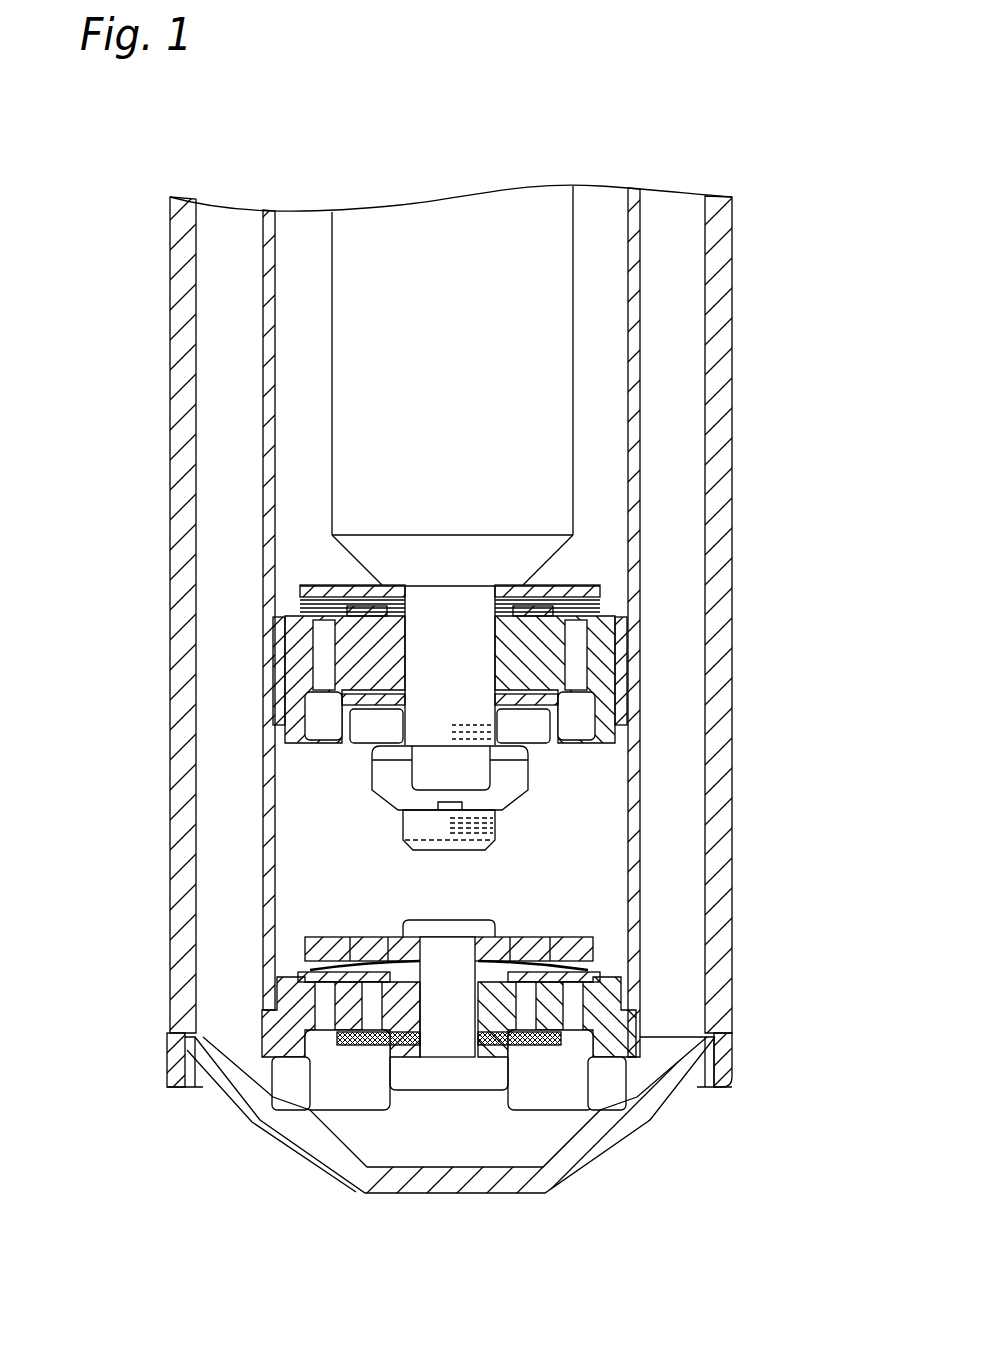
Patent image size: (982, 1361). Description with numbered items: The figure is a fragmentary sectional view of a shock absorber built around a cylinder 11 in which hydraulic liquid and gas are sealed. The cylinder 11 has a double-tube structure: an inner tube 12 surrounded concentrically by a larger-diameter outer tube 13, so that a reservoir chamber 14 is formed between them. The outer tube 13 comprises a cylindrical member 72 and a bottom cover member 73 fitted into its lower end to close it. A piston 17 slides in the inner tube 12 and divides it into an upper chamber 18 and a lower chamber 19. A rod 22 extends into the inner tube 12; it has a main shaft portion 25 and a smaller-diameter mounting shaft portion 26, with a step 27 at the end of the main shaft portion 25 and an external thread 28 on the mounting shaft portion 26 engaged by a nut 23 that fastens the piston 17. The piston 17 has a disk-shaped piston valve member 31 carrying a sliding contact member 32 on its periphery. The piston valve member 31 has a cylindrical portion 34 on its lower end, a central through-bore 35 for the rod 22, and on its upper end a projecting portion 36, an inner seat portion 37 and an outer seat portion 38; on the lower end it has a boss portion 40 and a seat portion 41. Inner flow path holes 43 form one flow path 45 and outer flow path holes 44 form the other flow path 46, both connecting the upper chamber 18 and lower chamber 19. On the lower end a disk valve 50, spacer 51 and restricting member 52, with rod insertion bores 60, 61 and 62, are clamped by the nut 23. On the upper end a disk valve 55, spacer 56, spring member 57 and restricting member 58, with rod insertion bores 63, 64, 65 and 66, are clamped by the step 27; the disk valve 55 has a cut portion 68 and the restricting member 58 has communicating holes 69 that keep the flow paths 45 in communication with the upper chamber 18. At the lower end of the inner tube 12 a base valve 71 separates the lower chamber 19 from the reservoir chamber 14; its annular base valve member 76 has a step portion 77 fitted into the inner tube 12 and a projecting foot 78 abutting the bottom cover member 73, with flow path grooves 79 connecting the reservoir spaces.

The cylinder 11 is at (773, 128).
The inner tube 12 is at (640, 217).
The outer tube 13 is at (737, 228).
The reservoir chamber 14 is at (680, 296).
The piston 17 is at (645, 655).
The upper chamber 18 is at (300, 297).
The lower chamber 19 is at (268, 966).
The rod 22 is at (590, 347).
The nut 23 is at (528, 792).
The main shaft portion 25 is at (505, 212).
The mounting shaft portion 26 is at (497, 822).
The step 27 is at (600, 680).
The external thread 28 is at (497, 842).
The piston valve member 31 is at (307, 693).
The sliding contact member 32 is at (625, 733).
The cylindrical portion 34 is at (600, 725).
The through-bore 35 is at (480, 650).
The projecting portion 36 is at (387, 584).
The inner seat portion 37 is at (337, 584).
The outer seat portion 38 is at (300, 588).
The boss portion 40 is at (395, 755).
The seat portion 41 is at (305, 722).
The flow path hole 43 is at (600, 603).
The flow path hole 44 is at (325, 655).
The flow path 45 is at (632, 615).
The flow path 46 is at (278, 630).
The disk valve 50 is at (513, 770).
The spacer 51 is at (370, 742).
The restricting member 52 is at (385, 746).
The disk valve 55 is at (567, 587).
The spacer 56 is at (463, 625).
The spring member 57 is at (447, 600).
The restricting member 58 is at (600, 585).
The rod insertion bore 60 is at (403, 845).
The rod insertion bore 61 is at (405, 805).
The rod insertion bore 62 is at (400, 770).
The rod insertion bore 63 is at (445, 600).
The rod insertion bore 64 is at (433, 600).
The rod insertion bore 65 is at (425, 600).
The rod insertion bore 66 is at (417, 600).
The cut portion 68 is at (347, 584).
The communicating hole 69 is at (360, 584).
The base valve 71 is at (609, 955).
The cylindrical member 72 is at (732, 995).
The bottom cover member 73 is at (643, 1110).
The base valve member 76 is at (250, 1012).
The step portion 77 is at (265, 985).
The projecting foot 78 is at (603, 1090).
The flow path groove 79 is at (294, 1086).